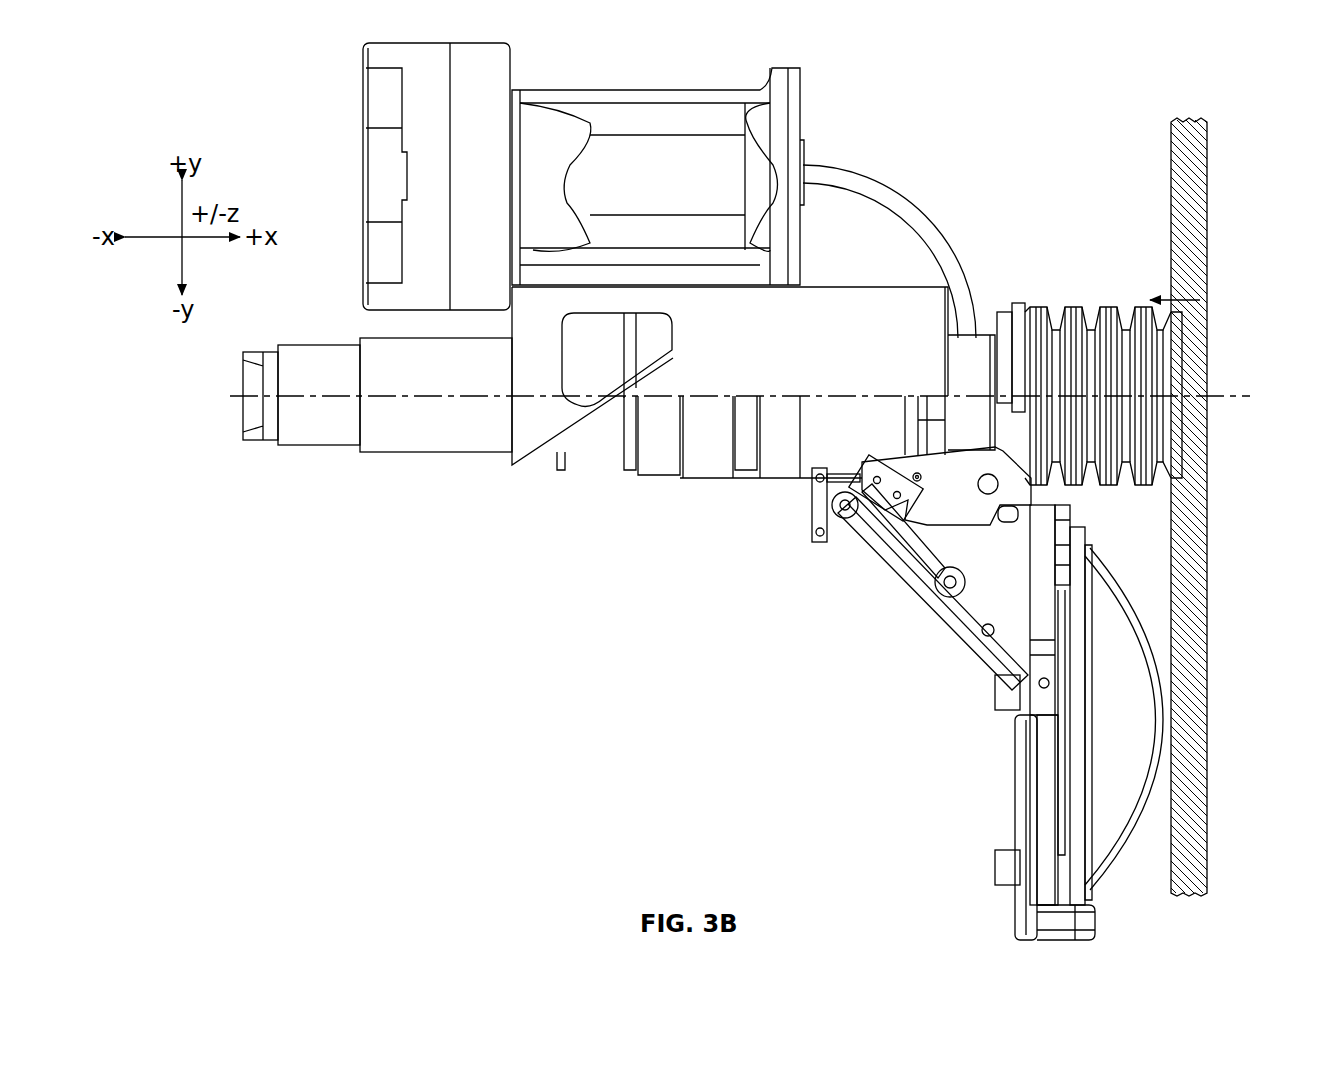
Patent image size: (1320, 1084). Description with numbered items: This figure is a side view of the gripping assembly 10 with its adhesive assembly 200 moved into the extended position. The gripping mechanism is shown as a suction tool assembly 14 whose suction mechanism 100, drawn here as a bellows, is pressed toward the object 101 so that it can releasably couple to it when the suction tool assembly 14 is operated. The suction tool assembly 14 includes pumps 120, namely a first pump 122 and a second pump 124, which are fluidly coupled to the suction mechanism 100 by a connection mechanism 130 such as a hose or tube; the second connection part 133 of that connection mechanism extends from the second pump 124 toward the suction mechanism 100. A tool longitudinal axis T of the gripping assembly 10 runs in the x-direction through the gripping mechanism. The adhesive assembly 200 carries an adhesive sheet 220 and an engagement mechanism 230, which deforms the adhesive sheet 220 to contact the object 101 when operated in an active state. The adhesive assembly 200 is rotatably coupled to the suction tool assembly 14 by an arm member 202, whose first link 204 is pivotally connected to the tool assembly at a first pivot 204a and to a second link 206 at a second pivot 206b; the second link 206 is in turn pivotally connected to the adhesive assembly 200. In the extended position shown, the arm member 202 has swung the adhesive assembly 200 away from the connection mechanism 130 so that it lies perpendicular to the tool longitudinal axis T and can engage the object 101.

The gripping assembly 10 is at (1235, 92).
The suction tool assembly 14 is at (1145, 282).
The suction mechanism 100 is at (1110, 310).
The object 101 is at (1204, 276).
The pump 120 is at (373, 165).
The first pump 122 is at (580, 460).
The second pump 124 is at (627, 112).
The connection mechanism 130 is at (968, 228).
The second connection part 133 is at (905, 190).
The adhesive assembly 200 is at (975, 692).
The arm member 202 is at (895, 565).
The first link 204 is at (852, 533).
The first pivot 204a is at (835, 512).
The second link 206 is at (978, 615).
The second pivot 206b is at (945, 588).
The adhesive sheet 220 is at (1125, 843).
The engagement mechanism 230 is at (1010, 782).
The tool longitudinal axis T is at (1240, 394).